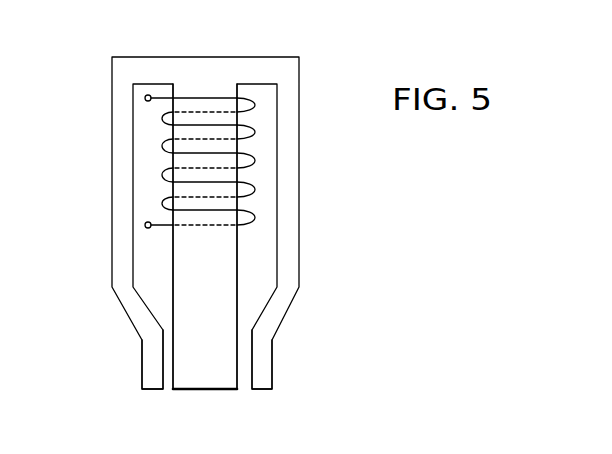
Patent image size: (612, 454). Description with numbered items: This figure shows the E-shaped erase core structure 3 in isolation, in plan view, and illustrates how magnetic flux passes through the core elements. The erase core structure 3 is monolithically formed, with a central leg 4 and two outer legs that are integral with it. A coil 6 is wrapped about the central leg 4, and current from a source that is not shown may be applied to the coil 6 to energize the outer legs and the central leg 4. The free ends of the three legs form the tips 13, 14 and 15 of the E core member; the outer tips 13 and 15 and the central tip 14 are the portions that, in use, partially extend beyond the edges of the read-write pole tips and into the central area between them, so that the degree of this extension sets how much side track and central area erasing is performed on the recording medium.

The erase core structure 3 is at (263, 73).
The central leg 4 is at (207, 298).
The coil 6 is at (145, 98).
The tip of E core member 13 is at (150, 390).
The tip of E core member 14 is at (207, 383).
The tip of E core member 15 is at (260, 390).